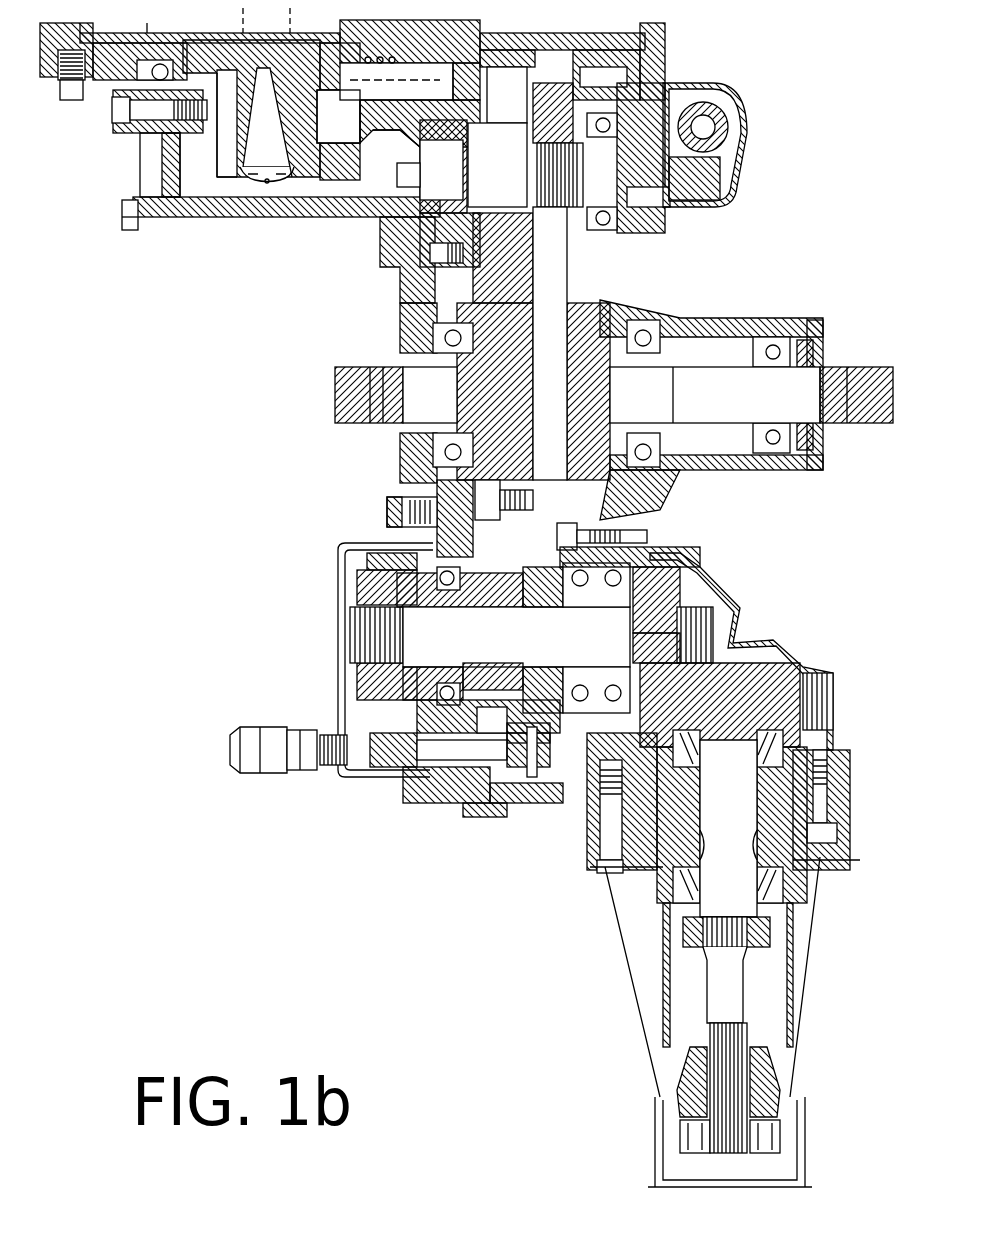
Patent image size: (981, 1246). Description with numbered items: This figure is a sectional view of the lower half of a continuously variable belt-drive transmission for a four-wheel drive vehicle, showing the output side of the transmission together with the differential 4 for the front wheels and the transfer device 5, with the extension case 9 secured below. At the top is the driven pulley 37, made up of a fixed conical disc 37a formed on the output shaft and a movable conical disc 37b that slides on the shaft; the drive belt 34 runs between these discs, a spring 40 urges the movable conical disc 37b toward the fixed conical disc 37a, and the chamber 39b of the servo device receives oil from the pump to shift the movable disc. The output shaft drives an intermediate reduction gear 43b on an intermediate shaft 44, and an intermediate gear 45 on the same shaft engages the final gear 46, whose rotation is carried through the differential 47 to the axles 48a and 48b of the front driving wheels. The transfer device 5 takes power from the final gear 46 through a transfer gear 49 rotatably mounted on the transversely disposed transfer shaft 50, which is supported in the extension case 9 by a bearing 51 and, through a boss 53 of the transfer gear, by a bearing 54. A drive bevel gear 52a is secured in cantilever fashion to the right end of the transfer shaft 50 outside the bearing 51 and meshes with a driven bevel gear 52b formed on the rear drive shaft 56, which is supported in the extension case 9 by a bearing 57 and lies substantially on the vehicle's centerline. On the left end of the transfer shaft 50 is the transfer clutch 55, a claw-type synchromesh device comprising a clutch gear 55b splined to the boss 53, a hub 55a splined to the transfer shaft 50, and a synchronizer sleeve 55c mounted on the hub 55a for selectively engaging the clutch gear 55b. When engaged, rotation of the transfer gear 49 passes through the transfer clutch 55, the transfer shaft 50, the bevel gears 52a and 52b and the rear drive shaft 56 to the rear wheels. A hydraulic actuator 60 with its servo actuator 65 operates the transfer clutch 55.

The differential 4 is at (575, 298).
The transfer device 5 is at (720, 617).
The extension case 9 is at (797, 960).
The drive belt 34 is at (262, 188).
The driven pulley 37 is at (228, 192).
The fixed conical disc 37a is at (227, 142).
The movable conical disc 37b is at (306, 170).
The chamber 39b is at (336, 125).
The spring 40 is at (402, 113).
The intermediate reduction gear 43b is at (558, 343).
The intermediate shaft 44 is at (501, 186).
The intermediate gear 45 is at (503, 130).
The final gear 46 is at (490, 280).
The differential 47 is at (597, 318).
The axle 48a is at (336, 380).
The axle 48b is at (875, 380).
The transfer gear 49 is at (500, 687).
The transfer shaft 50 is at (502, 657).
The bearing 51 is at (650, 547).
The drive bevel gear 52a is at (673, 580).
The driven bevel gear 52b is at (788, 690).
The boss 53 is at (470, 602).
The bearing 54 is at (418, 557).
The transfer clutch 55 is at (362, 552).
The hub 55a is at (363, 598).
The clutch gear 55b is at (405, 545).
The synchronizer sleeve 55c is at (367, 558).
The rear drive shaft 56 is at (733, 1007).
The bearing 57 is at (707, 762).
The hydraulic actuator 60 is at (362, 765).
The servo actuator 65 is at (553, 797).